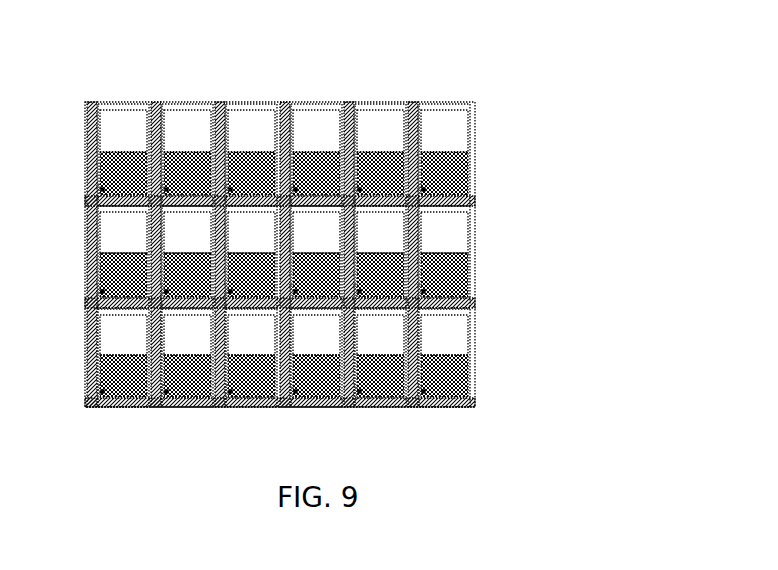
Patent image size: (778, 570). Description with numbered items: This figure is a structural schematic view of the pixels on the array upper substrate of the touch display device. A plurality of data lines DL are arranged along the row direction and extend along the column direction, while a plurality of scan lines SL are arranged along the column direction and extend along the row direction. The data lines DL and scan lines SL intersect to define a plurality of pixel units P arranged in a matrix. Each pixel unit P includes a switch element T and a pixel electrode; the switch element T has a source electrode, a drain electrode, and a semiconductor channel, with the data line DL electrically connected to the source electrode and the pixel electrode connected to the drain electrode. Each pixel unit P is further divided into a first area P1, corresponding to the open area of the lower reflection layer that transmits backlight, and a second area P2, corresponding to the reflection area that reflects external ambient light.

The data line DL is at (420, 117).
The scan line SL is at (467, 203).
The switch element T is at (465, 270).
The pixel unit P is at (533, 303).
The first area P1 is at (442, 337).
The second area P2 is at (468, 370).